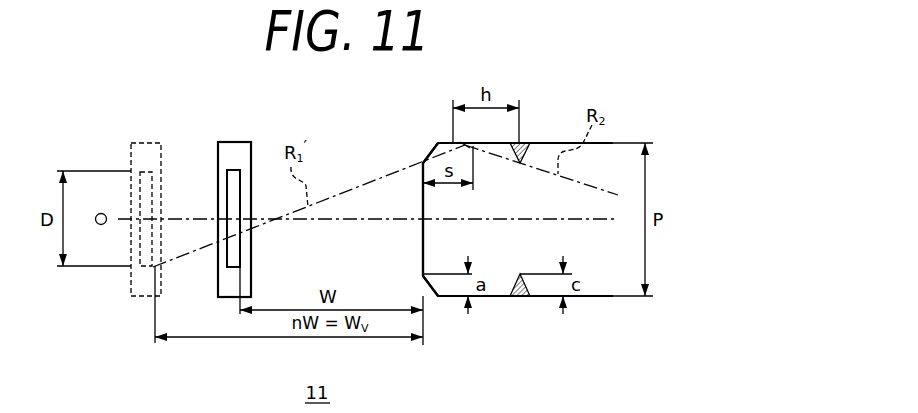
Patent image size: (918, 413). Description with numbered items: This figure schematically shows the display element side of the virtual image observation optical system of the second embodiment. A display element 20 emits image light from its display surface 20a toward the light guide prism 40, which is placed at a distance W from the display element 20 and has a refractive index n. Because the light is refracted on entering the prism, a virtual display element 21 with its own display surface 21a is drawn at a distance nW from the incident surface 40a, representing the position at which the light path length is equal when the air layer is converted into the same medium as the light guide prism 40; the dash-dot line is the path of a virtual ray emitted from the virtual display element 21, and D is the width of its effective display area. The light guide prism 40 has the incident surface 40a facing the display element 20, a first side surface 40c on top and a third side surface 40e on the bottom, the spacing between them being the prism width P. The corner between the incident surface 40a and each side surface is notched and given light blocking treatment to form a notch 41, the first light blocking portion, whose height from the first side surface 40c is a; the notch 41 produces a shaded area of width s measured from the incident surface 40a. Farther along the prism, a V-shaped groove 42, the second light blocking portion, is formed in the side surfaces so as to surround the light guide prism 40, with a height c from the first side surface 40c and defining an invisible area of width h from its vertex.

The display element 20 is at (218, 178).
The display surface 20a is at (234, 180).
The virtual display element 21 is at (131, 146).
The virtual light emitting portion 21a is at (148, 190).
The light guide prism 40 is at (543, 157).
The incident surface 40a is at (423, 232).
The first side surface 40c is at (610, 143).
The third side surface 40e is at (600, 297).
The notch 41 is at (433, 151).
The V-shaped groove 42 is at (515, 143).